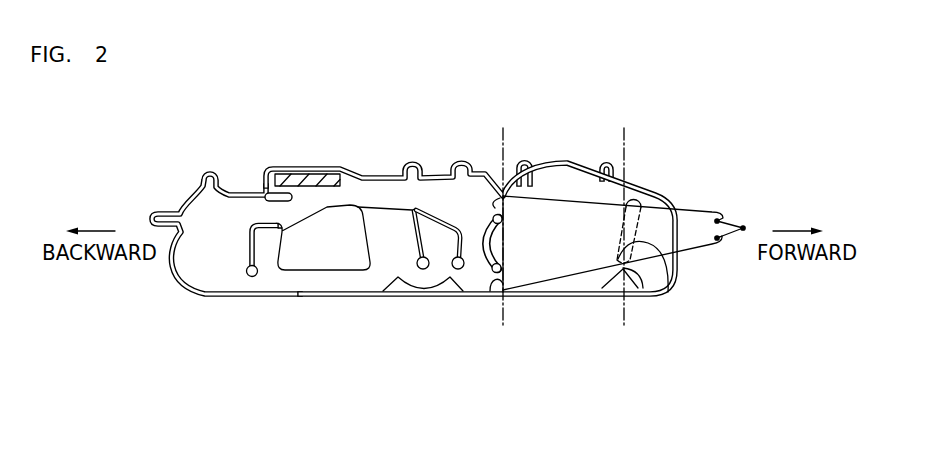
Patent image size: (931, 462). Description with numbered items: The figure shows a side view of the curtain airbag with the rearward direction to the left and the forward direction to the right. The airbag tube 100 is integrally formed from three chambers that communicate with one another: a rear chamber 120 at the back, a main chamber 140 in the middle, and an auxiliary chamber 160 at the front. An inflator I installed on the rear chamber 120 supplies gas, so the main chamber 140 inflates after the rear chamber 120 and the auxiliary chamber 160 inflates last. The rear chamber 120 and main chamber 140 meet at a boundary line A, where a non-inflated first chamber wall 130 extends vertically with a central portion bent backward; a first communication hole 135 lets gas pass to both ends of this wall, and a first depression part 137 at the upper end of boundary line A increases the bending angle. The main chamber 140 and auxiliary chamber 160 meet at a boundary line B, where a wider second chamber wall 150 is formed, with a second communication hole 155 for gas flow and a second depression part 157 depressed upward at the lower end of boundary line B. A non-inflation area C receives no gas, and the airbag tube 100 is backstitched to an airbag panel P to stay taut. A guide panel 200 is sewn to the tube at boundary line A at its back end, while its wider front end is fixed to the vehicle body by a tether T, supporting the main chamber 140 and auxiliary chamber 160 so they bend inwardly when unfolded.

The airbag tube 100 is at (383, 306).
The rear chamber 120 is at (232, 268).
The first chamber wall 130 is at (480, 245).
The first communication hole 135 is at (492, 180).
The first depression part 137 is at (515, 178).
The main chamber 140 is at (563, 300).
The second chamber wall 150 is at (658, 274).
The second communication hole 155 is at (651, 190).
The second depression part 157 is at (616, 290).
The auxiliary chamber 160 is at (662, 292).
The guide panel 200 is at (528, 262).
The airbag panel P is at (167, 217).
The inflator I is at (312, 177).
The boundary line A is at (505, 130).
The boundary line B is at (632, 138).
The non-inflation area C is at (318, 263).
The tether T is at (733, 227).